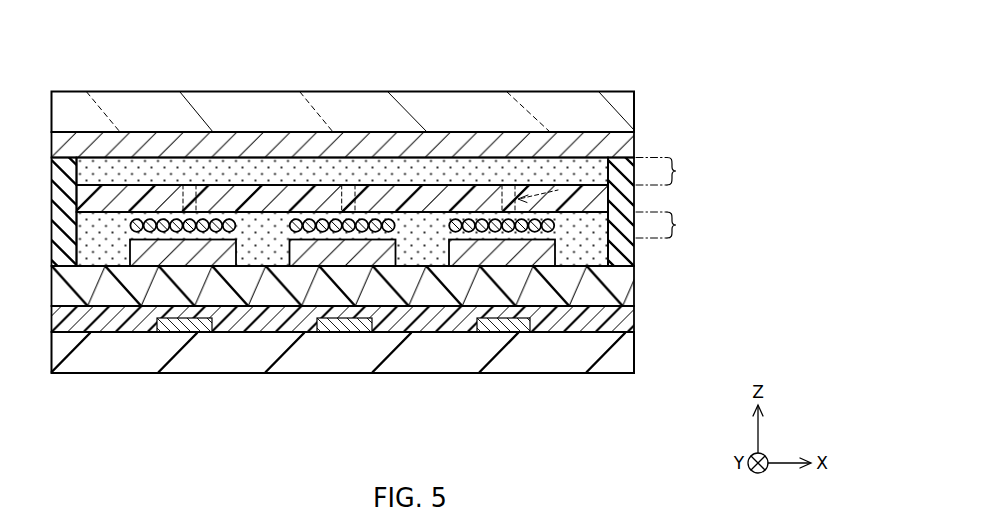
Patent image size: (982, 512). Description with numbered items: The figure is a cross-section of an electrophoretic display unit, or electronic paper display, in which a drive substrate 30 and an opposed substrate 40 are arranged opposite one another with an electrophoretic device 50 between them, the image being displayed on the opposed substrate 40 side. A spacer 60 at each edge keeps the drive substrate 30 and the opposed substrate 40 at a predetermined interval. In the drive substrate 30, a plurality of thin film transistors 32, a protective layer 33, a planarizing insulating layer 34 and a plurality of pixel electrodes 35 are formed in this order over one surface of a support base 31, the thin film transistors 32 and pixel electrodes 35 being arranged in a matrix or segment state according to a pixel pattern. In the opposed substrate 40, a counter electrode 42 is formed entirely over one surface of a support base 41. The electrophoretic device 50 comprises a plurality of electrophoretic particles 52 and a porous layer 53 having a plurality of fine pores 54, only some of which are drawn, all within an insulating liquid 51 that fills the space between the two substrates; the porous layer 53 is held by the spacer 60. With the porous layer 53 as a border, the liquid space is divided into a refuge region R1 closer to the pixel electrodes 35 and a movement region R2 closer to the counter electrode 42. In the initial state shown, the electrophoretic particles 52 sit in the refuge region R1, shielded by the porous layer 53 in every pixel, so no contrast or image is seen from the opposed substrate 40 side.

The drive substrate 30 is at (361, 360).
The support base 31 is at (107, 367).
The thin film transistor 32 is at (170, 322).
The protective layer 33 is at (232, 322).
The planarizing insulating layer 34 is at (303, 290).
The pixel electrode 35 is at (495, 250).
The opposed substrate 40 is at (380, 217).
The support base 41 is at (102, 92).
The counter electrode 42 is at (183, 147).
The electrophoretic device 50 is at (428, 240).
The insulating liquid 51 is at (263, 165).
The electrophoretic particle 52 is at (321, 221).
The porous layer 53 is at (473, 200).
The fine pore 54 is at (562, 170).
The spacer 60 is at (622, 262).
The refuge region R1 is at (672, 225).
The movement region R2 is at (672, 172).